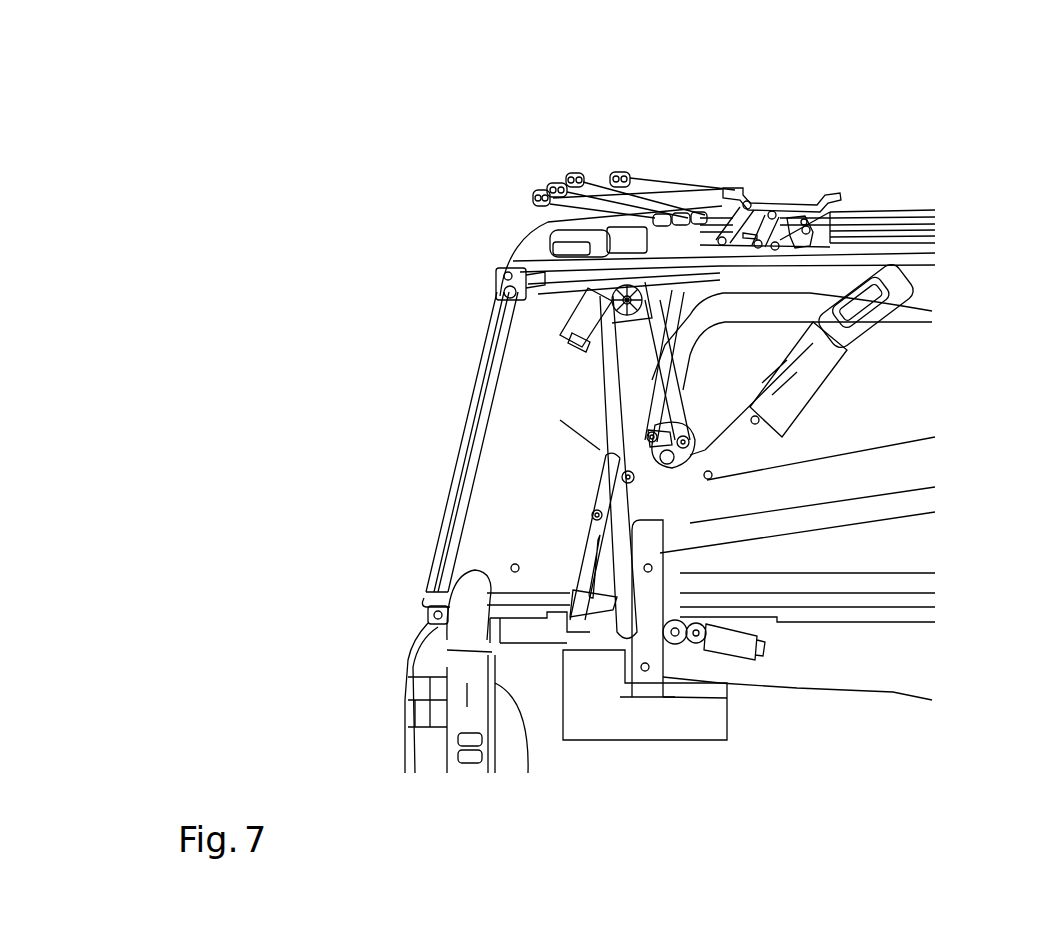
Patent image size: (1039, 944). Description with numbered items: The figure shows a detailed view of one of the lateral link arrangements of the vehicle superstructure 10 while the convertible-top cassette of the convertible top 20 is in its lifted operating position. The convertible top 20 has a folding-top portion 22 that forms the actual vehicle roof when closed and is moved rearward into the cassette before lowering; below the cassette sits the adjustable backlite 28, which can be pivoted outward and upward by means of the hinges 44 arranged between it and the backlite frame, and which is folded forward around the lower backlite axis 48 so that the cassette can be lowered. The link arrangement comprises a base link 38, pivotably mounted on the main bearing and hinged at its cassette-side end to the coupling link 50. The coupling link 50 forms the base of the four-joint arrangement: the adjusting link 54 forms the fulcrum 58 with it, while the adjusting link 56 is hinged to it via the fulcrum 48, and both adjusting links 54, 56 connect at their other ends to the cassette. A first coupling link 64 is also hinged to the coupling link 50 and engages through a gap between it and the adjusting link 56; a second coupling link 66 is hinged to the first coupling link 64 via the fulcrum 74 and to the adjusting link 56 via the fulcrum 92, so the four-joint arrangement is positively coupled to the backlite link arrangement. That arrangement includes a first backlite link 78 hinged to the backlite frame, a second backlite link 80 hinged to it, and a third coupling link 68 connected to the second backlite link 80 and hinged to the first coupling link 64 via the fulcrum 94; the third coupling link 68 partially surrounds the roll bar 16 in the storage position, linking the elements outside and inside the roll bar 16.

The vehicle superstructure 10 is at (908, 205).
The roll bar 16 is at (682, 520).
The convertible top 20 is at (750, 190).
The folding-top portion 22 is at (682, 200).
The backlite 28 is at (487, 330).
The base link 38 is at (700, 477).
The hinges 44 is at (496, 290).
The lower backlite axis / fulcrum 48 is at (428, 619).
The coupling link 50 is at (672, 462).
The adjusting link 54 is at (600, 363).
The adjusting link 56 is at (650, 370).
The fulcrum 58 is at (640, 472).
The first coupling link 64 is at (602, 493).
The second coupling link 66 is at (682, 408).
The third coupling link 68 is at (587, 540).
The fulcrum 74 is at (680, 389).
The first backlite link 78 is at (660, 420).
The second backlite link 80 is at (648, 455).
The fulcrum 92 is at (690, 442).
The fulcrum 94 is at (592, 514).